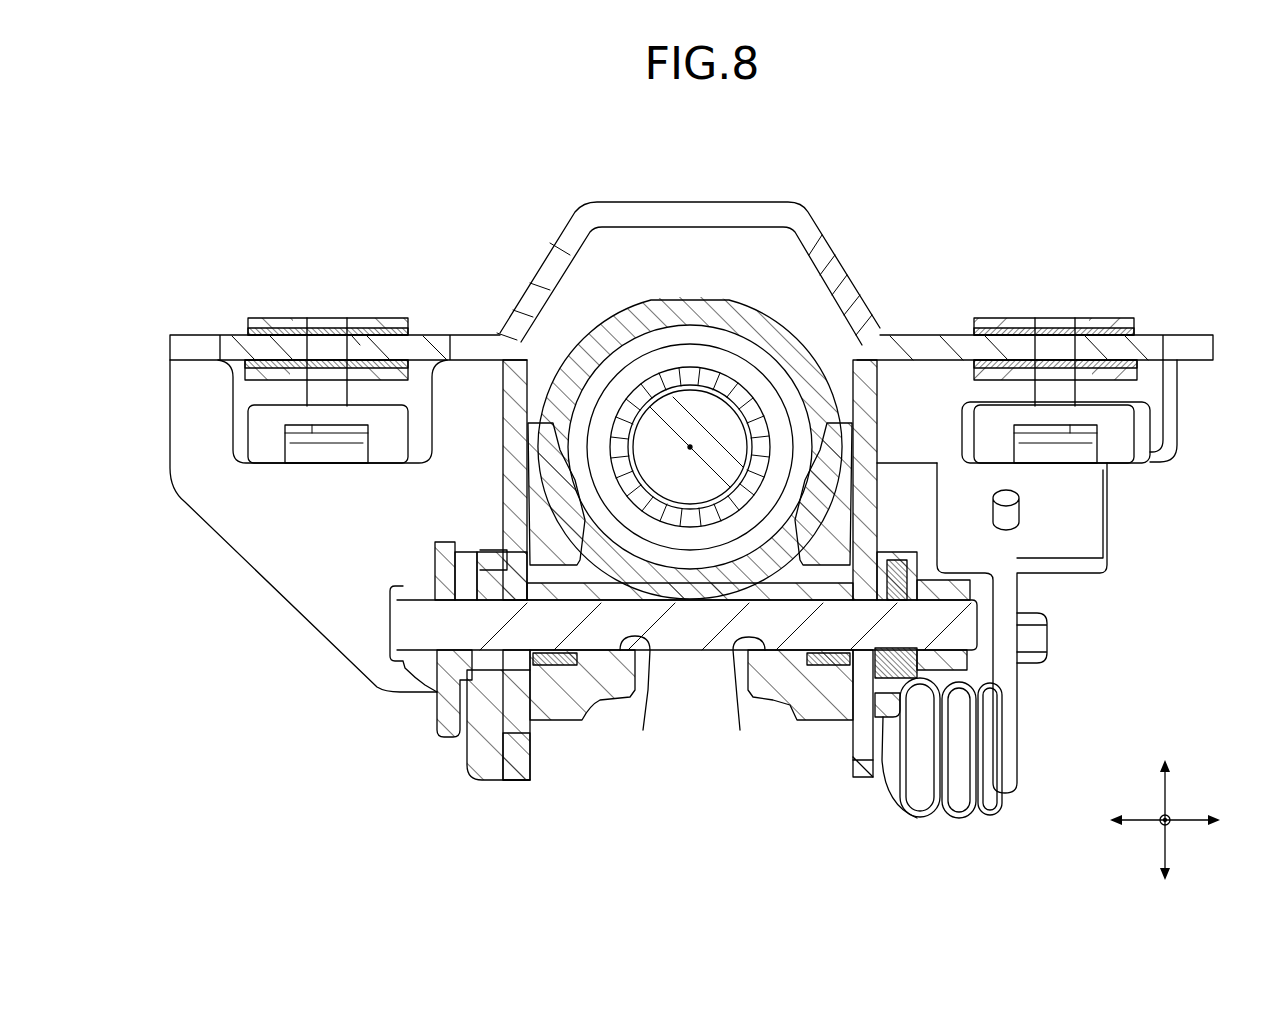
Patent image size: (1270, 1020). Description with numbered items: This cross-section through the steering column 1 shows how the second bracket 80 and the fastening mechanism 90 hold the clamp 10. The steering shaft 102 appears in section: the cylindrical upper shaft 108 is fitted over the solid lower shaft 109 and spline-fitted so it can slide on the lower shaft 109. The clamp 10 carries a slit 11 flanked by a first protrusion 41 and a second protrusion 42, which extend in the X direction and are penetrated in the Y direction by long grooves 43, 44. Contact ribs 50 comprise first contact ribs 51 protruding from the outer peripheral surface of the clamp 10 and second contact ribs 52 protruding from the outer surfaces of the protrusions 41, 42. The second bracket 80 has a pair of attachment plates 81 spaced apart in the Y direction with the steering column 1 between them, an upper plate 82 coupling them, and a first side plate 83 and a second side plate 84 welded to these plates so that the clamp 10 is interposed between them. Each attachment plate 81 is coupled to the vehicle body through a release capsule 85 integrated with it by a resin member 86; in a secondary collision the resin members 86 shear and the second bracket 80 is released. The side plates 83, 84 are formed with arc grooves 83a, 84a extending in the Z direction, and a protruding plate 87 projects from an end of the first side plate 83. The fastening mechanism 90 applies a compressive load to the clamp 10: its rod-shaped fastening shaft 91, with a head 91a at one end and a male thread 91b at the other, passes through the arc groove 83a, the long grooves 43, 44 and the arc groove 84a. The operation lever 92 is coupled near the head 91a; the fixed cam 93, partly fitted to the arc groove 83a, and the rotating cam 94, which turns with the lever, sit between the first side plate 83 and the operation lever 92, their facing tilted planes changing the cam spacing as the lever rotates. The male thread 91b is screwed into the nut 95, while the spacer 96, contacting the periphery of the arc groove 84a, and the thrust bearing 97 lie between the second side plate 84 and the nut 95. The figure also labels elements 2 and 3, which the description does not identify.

The steering column 1 is at (583, 301).
The motor 2 is at (690, 447).
The motor housing 3 is at (800, 340).
The clamp 10 is at (735, 312).
The slit 11 is at (683, 603).
The first protrusion 41 is at (570, 722).
The second protrusion 42 is at (810, 722).
The long groove 43 is at (647, 700).
The long groove 44 is at (740, 700).
The contact ribs 50 is at (878, 438).
The first contact ribs 51 is at (500, 445).
The second contact ribs 52 is at (535, 740).
The second bracket 80 is at (1188, 274).
The attachment plates 81 is at (247, 350).
The upper plate 82 is at (763, 215).
The first side plate 83 is at (505, 398).
The arc groove 83a is at (503, 778).
The second side plate 84 is at (872, 432).
The arc groove 84a is at (893, 718).
The release capsules 85 is at (367, 317).
The resin members 86 is at (270, 318).
The protruding plate 87 is at (208, 500).
The fastening mechanism 90 is at (402, 724).
The fastening shaft 91 is at (667, 645).
The head 91a is at (393, 678).
The male thread 91b is at (947, 627).
The operation lever 92 is at (448, 740).
The fixed cam 93 is at (493, 558).
The rotating cam 94 is at (403, 590).
The nut 95 is at (950, 567).
The spacer 96 is at (897, 550).
The thrust bearing 97 is at (952, 668).
The steering shaft 102 is at (590, 153).
The upper shaft 108 is at (677, 405).
The lower shaft 109 is at (680, 405).